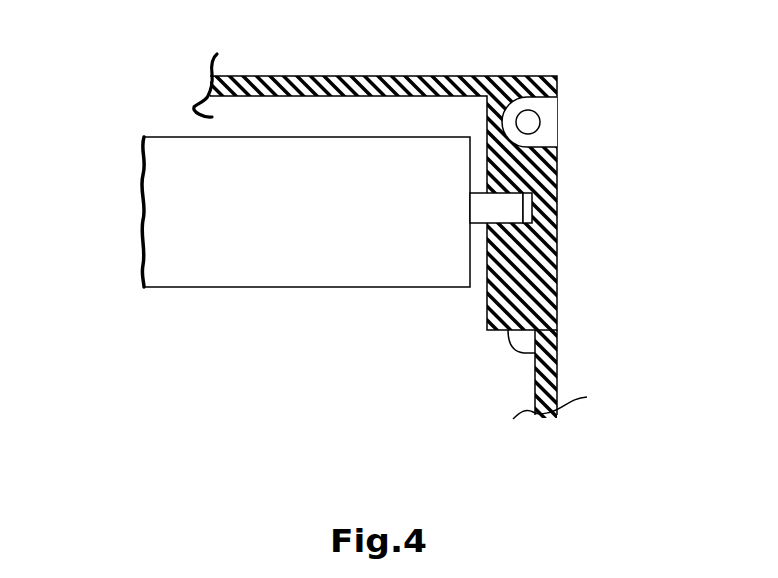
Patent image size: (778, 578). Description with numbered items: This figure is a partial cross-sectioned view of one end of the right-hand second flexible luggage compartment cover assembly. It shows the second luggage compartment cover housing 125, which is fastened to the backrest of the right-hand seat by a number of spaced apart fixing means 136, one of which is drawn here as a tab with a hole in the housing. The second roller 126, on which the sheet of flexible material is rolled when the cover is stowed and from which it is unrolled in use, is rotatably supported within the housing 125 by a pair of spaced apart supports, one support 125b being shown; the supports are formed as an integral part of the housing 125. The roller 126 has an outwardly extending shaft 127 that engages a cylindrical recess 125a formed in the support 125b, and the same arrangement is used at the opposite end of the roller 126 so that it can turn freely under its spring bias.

The second luggage compartment cover housing 125 is at (305, 76).
The cylindrical recess 125a is at (533, 203).
The support 125b is at (555, 358).
The second roller 126 is at (147, 137).
The shaft 127 is at (533, 214).
The fixing means 136 is at (557, 113).